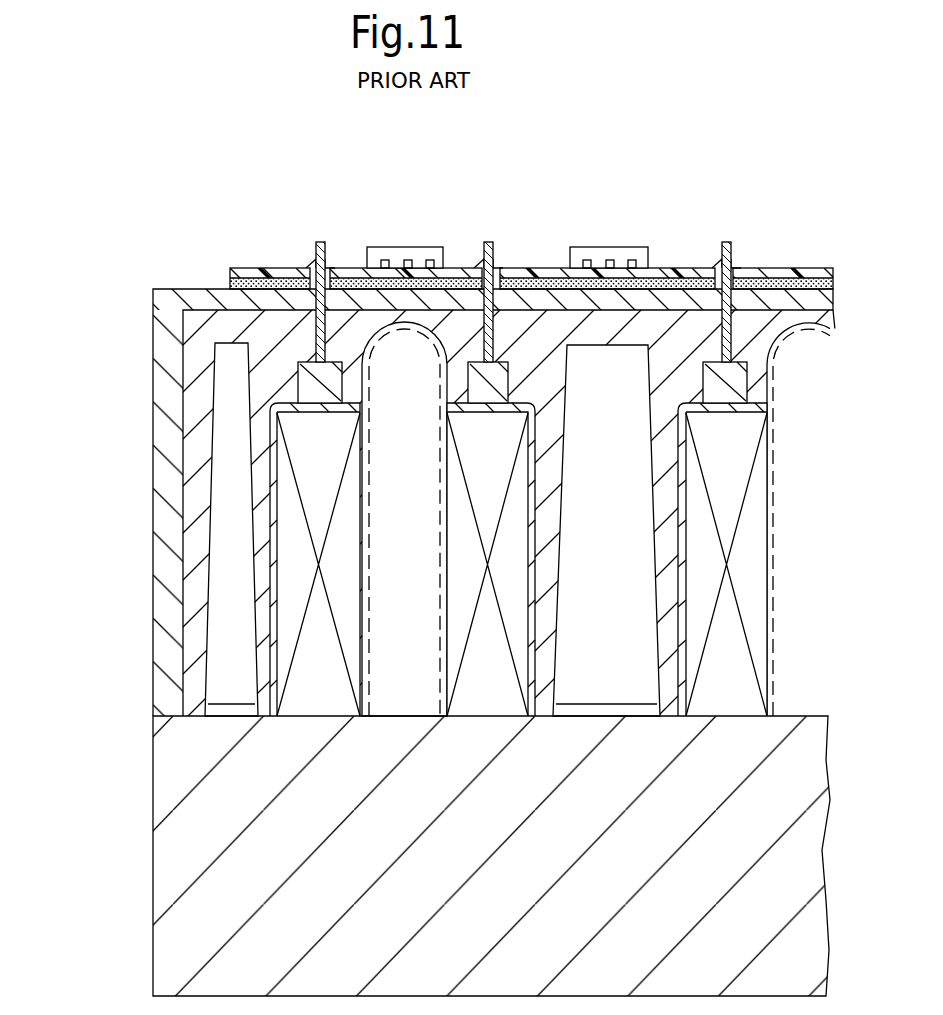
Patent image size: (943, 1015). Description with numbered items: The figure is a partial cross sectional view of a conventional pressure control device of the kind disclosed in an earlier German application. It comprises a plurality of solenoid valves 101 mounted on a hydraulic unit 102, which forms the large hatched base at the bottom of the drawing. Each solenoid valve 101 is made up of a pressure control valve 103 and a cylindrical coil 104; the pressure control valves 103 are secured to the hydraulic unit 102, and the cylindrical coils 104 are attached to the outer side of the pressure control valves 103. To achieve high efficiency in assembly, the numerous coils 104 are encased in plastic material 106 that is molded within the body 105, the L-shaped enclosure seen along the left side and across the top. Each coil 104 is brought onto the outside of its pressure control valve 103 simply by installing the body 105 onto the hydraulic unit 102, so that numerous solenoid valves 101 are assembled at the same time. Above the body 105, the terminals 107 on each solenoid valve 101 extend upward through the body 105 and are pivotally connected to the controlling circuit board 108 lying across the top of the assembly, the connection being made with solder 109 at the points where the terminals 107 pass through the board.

The solenoid valve 101 is at (430, 519).
The hydraulic unit 102 is at (180, 935).
The pressure control valve 103 is at (382, 597).
The cylindrical coil 104 is at (284, 497).
The body 105 is at (160, 398).
The plastic material 106 is at (193, 338).
The terminal 107 is at (315, 262).
The controlling circuit board 108 is at (690, 268).
The solder 109 is at (506, 263).